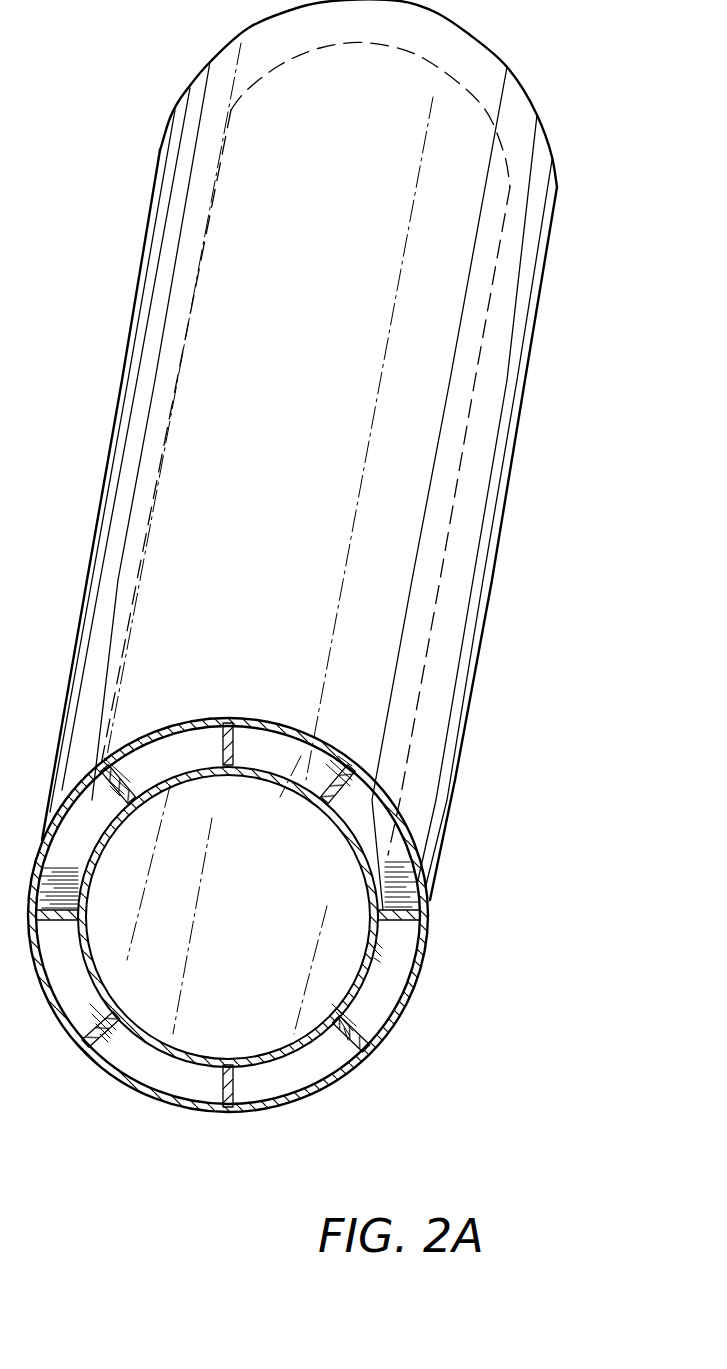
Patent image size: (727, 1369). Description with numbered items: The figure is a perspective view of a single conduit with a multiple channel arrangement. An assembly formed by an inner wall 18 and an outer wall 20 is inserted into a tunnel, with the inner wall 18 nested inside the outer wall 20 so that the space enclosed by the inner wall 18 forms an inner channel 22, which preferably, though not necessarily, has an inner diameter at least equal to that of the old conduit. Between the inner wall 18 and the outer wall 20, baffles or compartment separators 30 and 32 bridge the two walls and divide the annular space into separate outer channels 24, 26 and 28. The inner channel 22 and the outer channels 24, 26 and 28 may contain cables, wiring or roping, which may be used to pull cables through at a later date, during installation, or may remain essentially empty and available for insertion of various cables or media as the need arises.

The inner wall 18 is at (333, 830).
The outer wall 20 is at (379, 1046).
The inner channel 22 is at (333, 958).
The outer channel 24 is at (297, 1073).
The outer channel 26 is at (182, 1077).
The outer channel 28 is at (78, 1000).
The compartment separator 30 is at (111, 1040).
The compartment separator 32 is at (242, 1093).